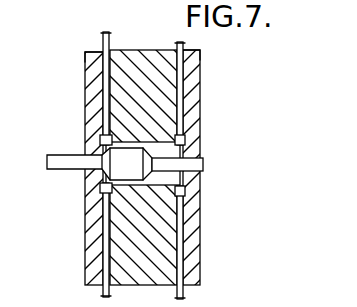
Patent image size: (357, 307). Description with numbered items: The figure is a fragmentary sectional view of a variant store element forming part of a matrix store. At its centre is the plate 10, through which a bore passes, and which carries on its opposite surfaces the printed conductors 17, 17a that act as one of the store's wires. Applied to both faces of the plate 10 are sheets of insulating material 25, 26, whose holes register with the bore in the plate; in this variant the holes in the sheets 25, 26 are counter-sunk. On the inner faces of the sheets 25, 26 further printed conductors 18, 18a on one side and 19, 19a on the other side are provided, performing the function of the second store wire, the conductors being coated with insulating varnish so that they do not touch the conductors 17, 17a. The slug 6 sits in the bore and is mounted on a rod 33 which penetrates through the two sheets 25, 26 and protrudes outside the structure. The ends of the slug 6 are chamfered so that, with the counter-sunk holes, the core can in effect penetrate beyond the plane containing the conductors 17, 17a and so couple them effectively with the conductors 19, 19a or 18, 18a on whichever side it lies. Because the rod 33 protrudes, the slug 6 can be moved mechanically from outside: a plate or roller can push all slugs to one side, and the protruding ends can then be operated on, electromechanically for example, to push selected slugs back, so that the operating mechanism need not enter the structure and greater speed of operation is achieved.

The slug 6 is at (117, 163).
The plate 10 is at (134, 50).
The conductor 17 is at (100, 233).
The conductor 17a is at (183, 112).
The conductor 18 is at (102, 134).
The conductor 18a is at (100, 188).
The conductor 19 is at (185, 134).
The conductor 19a is at (185, 192).
The sheet of insulating material 25 is at (86, 54).
The sheet of insulating material 26 is at (196, 51).
The rod 33 is at (193, 163).